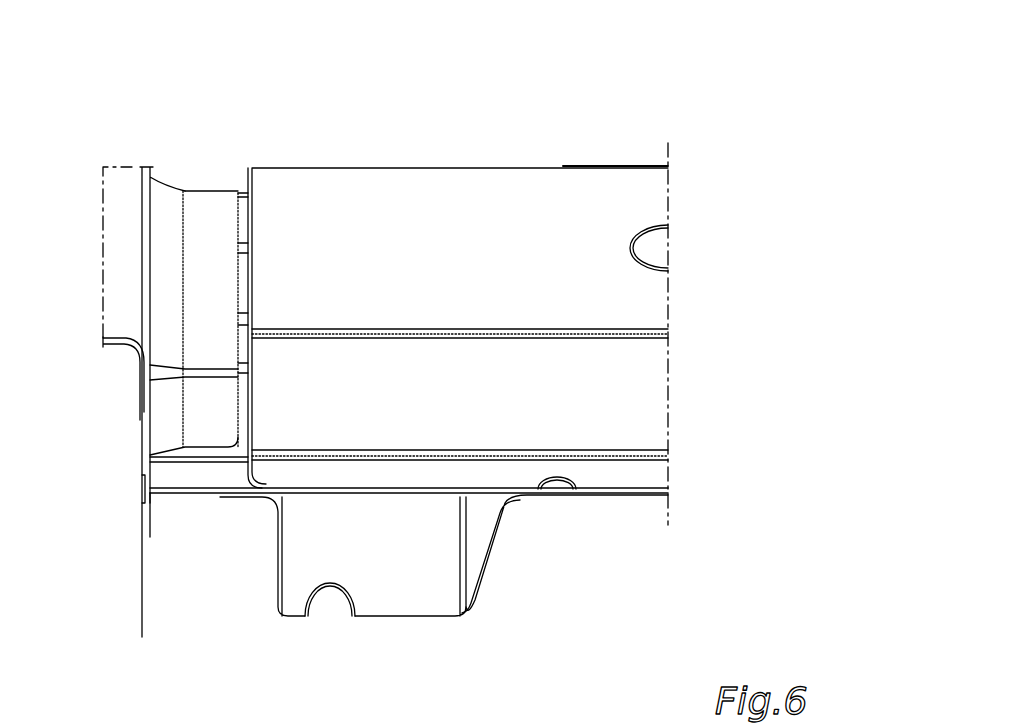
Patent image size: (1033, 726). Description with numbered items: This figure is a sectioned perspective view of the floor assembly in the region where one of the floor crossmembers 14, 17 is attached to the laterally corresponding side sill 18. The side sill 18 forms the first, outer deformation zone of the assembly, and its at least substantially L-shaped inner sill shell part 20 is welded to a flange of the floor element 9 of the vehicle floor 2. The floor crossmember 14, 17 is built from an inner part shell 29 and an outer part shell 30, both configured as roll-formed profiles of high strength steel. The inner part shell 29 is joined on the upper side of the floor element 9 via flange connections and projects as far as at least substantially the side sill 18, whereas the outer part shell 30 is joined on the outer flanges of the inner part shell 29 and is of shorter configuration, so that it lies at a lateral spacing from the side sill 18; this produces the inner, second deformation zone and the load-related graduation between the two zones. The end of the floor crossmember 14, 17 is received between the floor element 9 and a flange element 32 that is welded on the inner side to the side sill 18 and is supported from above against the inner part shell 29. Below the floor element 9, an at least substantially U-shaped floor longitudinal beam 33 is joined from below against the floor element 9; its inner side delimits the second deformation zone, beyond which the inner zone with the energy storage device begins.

The vehicle floor 2 is at (690, 154).
The floor element 9 is at (192, 497).
The floor crossmember 14 is at (690, 327).
The floor crossmember 17 is at (199, 459).
The side sill 18 is at (126, 156).
The inner sill shell part 20 is at (140, 392).
The inner part shell 29 is at (243, 210).
The outer part shell 30 is at (345, 223).
The flange element 32 is at (208, 222).
The floor longitudinal beam 33 is at (405, 588).